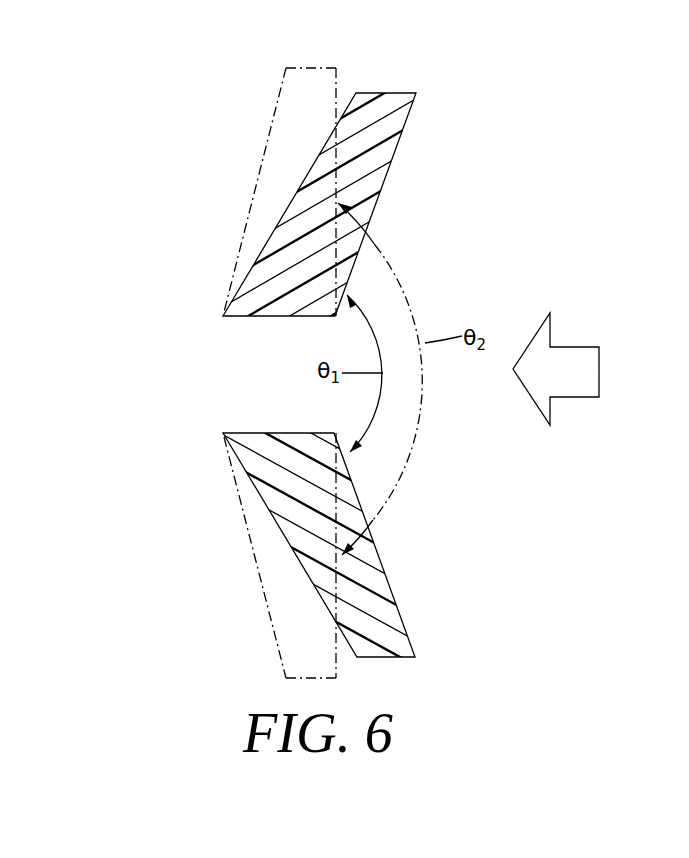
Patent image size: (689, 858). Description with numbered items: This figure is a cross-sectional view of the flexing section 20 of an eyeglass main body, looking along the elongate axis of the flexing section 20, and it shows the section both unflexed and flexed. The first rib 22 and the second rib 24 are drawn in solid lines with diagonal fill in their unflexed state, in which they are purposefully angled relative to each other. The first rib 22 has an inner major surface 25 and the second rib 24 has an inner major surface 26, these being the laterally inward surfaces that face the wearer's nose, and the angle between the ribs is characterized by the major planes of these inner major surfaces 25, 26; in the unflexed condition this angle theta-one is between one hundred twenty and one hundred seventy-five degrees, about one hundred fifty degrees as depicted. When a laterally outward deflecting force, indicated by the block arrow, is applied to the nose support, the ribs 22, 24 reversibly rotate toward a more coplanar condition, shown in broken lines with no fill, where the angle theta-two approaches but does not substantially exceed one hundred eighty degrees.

The flexing section 20 is at (116, 159).
The first rib 22 is at (382, 620).
The second rib 24 is at (270, 262).
The inner major surface 25 is at (387, 572).
The inner major surface 26 is at (397, 140).